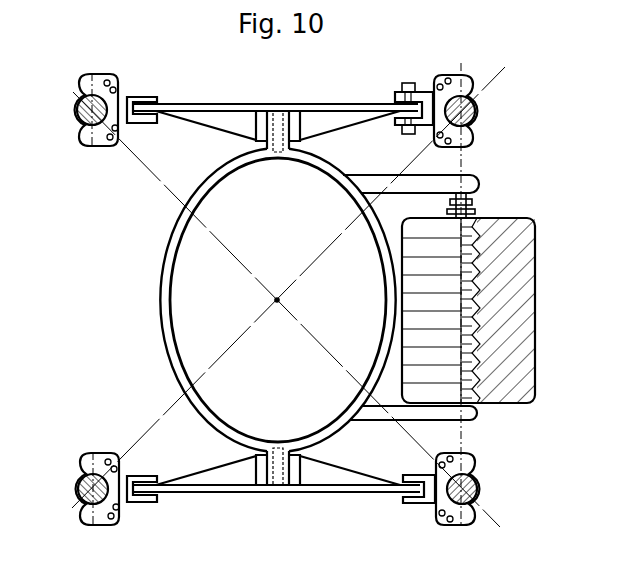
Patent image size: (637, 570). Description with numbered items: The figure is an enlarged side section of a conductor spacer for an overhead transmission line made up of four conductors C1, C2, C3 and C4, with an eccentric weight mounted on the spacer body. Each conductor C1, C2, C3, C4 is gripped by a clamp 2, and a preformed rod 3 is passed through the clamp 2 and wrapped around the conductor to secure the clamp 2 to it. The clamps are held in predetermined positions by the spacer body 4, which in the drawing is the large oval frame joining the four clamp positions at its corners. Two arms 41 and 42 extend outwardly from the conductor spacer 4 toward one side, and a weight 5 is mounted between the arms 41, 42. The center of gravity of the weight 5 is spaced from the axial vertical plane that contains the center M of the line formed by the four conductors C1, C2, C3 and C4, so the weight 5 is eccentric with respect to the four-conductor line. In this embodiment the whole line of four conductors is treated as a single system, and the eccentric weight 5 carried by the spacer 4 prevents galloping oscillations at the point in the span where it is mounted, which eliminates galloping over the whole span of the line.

The clamp 2 is at (472, 86).
The preformed rod 3 is at (441, 83).
The spacer body 4 is at (162, 283).
The weight 5 is at (513, 226).
The arm 41 is at (435, 185).
The arm 42 is at (468, 421).
The conductor C1 is at (475, 114).
The conductor C2 is at (77, 112).
The conductor C3 is at (78, 490).
The conductor C4 is at (477, 489).
The center of the line M is at (281, 301).